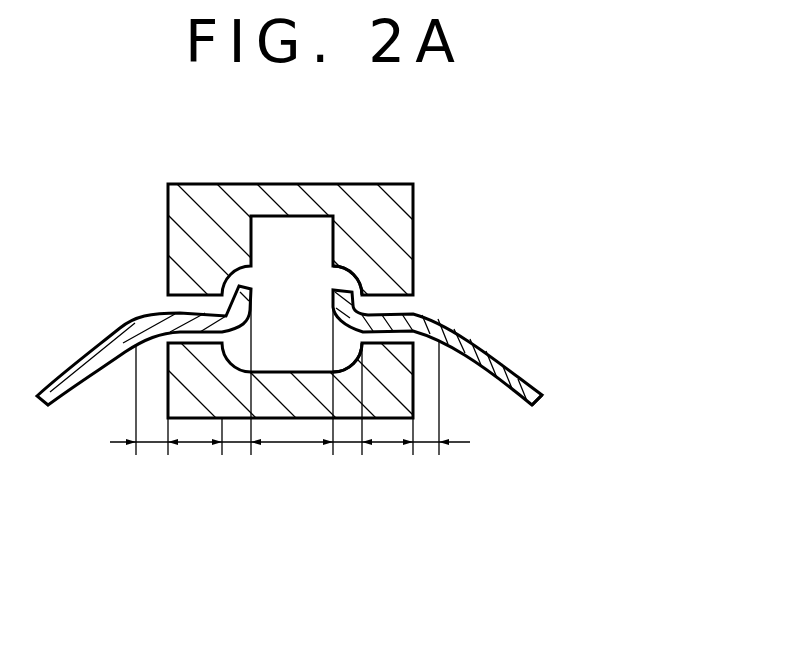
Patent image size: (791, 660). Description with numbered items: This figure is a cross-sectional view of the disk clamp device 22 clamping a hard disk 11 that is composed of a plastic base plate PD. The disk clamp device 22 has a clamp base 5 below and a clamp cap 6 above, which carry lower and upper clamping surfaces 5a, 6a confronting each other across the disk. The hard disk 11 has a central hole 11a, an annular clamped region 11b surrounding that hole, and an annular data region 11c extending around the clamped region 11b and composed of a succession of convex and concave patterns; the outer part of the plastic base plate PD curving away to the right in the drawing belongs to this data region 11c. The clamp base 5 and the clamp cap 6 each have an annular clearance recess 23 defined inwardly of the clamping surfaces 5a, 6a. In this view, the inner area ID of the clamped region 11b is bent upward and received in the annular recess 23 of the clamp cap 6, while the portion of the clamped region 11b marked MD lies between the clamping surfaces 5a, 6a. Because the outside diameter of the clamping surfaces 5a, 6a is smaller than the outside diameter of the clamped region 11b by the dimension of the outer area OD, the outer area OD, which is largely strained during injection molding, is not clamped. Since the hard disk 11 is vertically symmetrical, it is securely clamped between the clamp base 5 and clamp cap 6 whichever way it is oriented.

The disk clamp device 22 is at (156, 188).
The clamp cap 6 is at (367, 208).
The clamping surface 6a is at (377, 292).
The clamp base 5 is at (297, 406).
The clamping surface 5a is at (370, 345).
The hard disk 11 is at (330, 322).
The central hole 11a is at (317, 296).
The clamped region 11b is at (400, 317).
The data region 11c is at (522, 378).
The annular clearance recess 23 is at (343, 282).
The plastic base plate PD is at (540, 400).
The outer area OD is at (152, 444).
The middle diameter dimension MD is at (197, 444).
The inner area ID is at (237, 444).